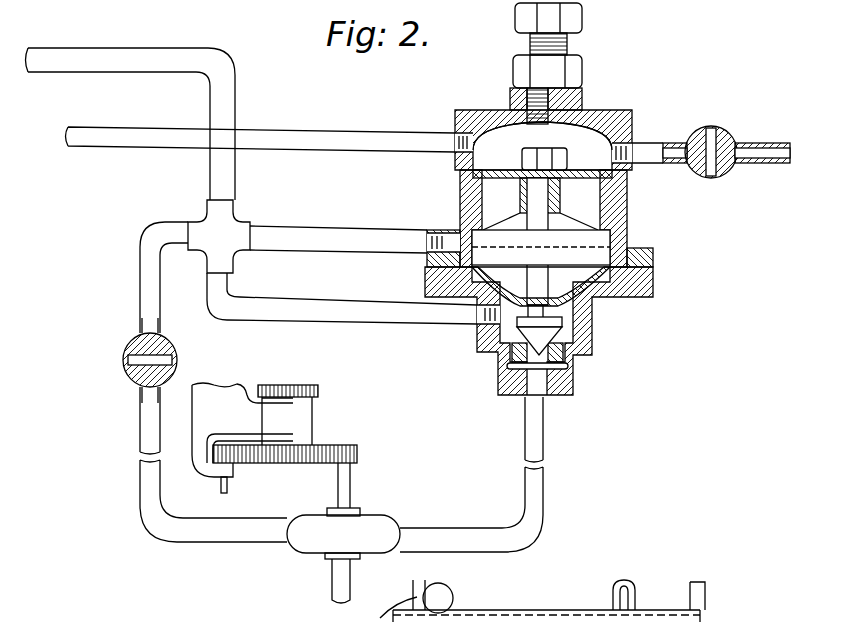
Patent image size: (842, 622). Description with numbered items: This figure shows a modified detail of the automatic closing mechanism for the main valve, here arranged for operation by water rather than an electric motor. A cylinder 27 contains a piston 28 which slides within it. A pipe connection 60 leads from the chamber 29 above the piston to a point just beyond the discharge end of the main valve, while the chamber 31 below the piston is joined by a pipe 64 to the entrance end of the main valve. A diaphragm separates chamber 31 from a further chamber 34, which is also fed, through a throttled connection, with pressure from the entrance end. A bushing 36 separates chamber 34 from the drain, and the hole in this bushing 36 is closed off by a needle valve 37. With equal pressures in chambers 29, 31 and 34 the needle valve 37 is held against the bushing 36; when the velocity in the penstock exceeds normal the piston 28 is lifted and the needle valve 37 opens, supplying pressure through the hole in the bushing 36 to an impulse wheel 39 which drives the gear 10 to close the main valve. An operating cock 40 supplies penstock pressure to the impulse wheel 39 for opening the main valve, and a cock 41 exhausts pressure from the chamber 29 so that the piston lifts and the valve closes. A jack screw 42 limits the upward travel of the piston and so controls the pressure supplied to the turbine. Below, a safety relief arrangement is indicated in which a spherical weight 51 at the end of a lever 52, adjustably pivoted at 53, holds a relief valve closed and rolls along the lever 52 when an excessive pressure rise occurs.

The gear 10 is at (316, 392).
The cylinder 27 is at (573, 147).
The piston 28 is at (603, 197).
The chamber 29 is at (587, 130).
The chamber 31 is at (593, 242).
The chamber 34 is at (566, 312).
The bushing 36 is at (510, 343).
The needle valve 37 is at (583, 350).
The impulse wheel 39 is at (315, 535).
The operating cock 40 is at (123, 360).
The cock 41 is at (718, 138).
The jack screw 42 is at (578, 18).
The weight 51 is at (446, 601).
The lever 52 is at (511, 621).
The pivot 53 is at (616, 612).
The pipe connection 60 is at (360, 137).
The pipe 64 is at (127, 58).